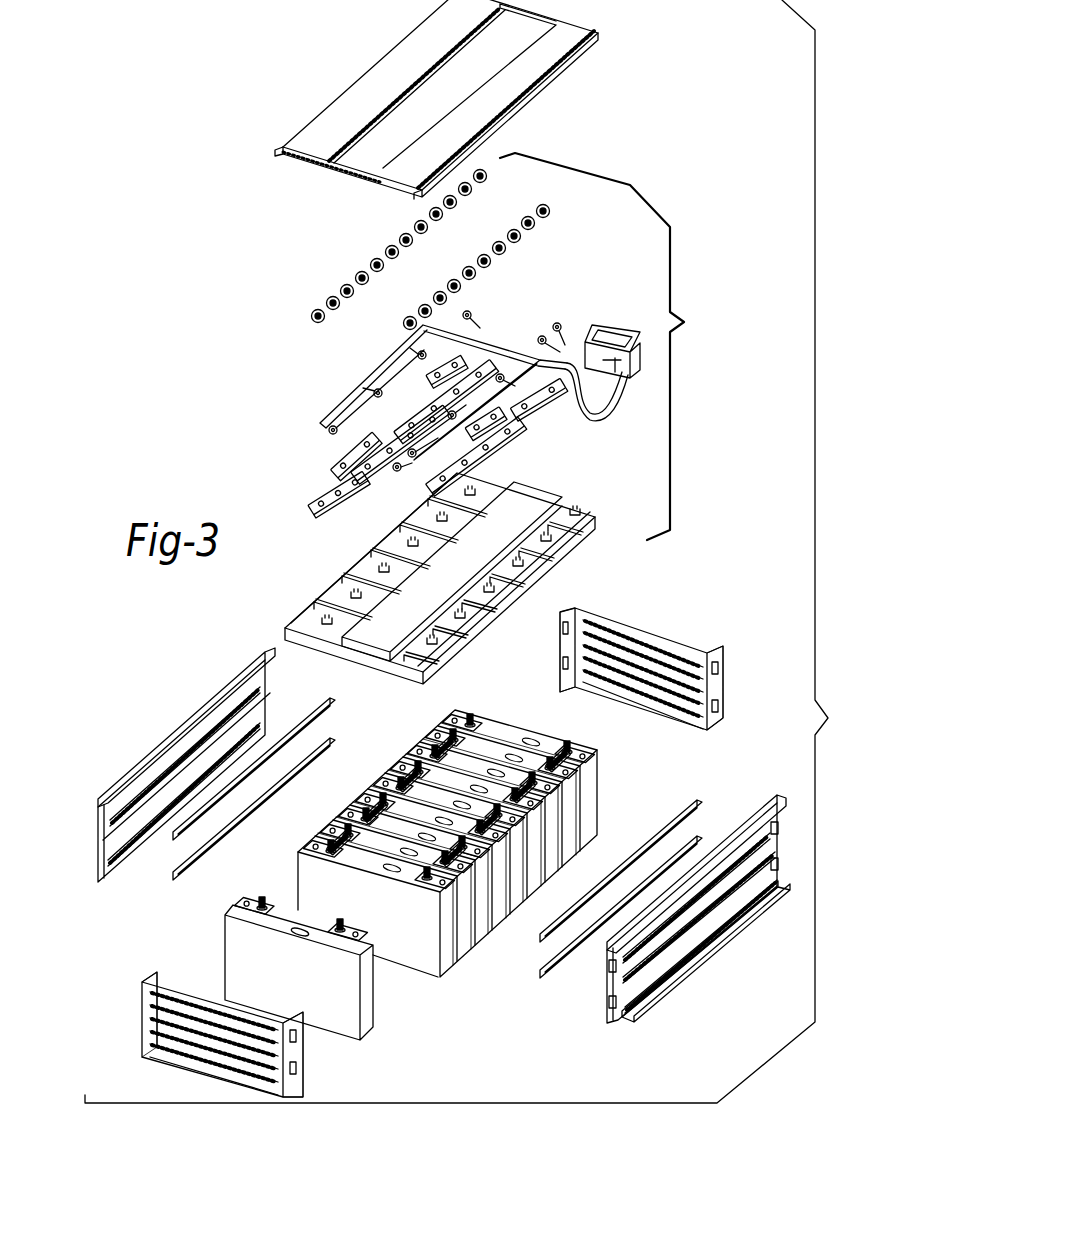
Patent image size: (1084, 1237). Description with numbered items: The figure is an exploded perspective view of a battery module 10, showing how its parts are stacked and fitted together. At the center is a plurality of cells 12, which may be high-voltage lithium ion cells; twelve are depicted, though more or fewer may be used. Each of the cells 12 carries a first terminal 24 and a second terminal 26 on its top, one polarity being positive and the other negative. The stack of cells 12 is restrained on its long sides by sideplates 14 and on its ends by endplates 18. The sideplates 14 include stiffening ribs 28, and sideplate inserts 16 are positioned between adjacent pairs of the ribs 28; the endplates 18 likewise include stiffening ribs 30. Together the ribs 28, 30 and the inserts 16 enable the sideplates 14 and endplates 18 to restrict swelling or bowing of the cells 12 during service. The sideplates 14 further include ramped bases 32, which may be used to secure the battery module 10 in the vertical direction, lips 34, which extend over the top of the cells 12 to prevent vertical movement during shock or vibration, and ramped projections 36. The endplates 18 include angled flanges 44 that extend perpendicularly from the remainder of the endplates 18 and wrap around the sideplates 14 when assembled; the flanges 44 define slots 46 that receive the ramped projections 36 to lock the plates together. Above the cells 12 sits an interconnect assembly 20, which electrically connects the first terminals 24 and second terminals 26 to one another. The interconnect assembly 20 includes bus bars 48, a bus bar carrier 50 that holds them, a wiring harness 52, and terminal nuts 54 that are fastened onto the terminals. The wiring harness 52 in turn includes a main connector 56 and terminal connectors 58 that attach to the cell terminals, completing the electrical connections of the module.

The battery module 10 is at (474, 551).
The cells 12 is at (458, 952).
The sideplates 14 is at (105, 838).
The sideplate inserts 16 is at (221, 808).
The endplates 18 is at (146, 1010).
The interconnect assembly 20 is at (496, 270).
The first terminals 24 is at (331, 838).
The second terminals 26 is at (460, 735).
The stiffening ribs 28 is at (682, 915).
The stiffening ribs 30 is at (225, 1052).
The ramped bases 32 is at (663, 980).
The lips 34 is at (178, 738).
The ramped projections 36 is at (778, 863).
The angled flanges 44 is at (150, 978).
The slots 46 is at (565, 667).
The bus bars 48 is at (320, 510).
The bus bar carrier 50 is at (318, 588).
The wiring harness 52 is at (478, 346).
The terminal nuts 54 is at (313, 311).
The main connector 56 is at (612, 335).
The terminal connectors 58 is at (333, 425).